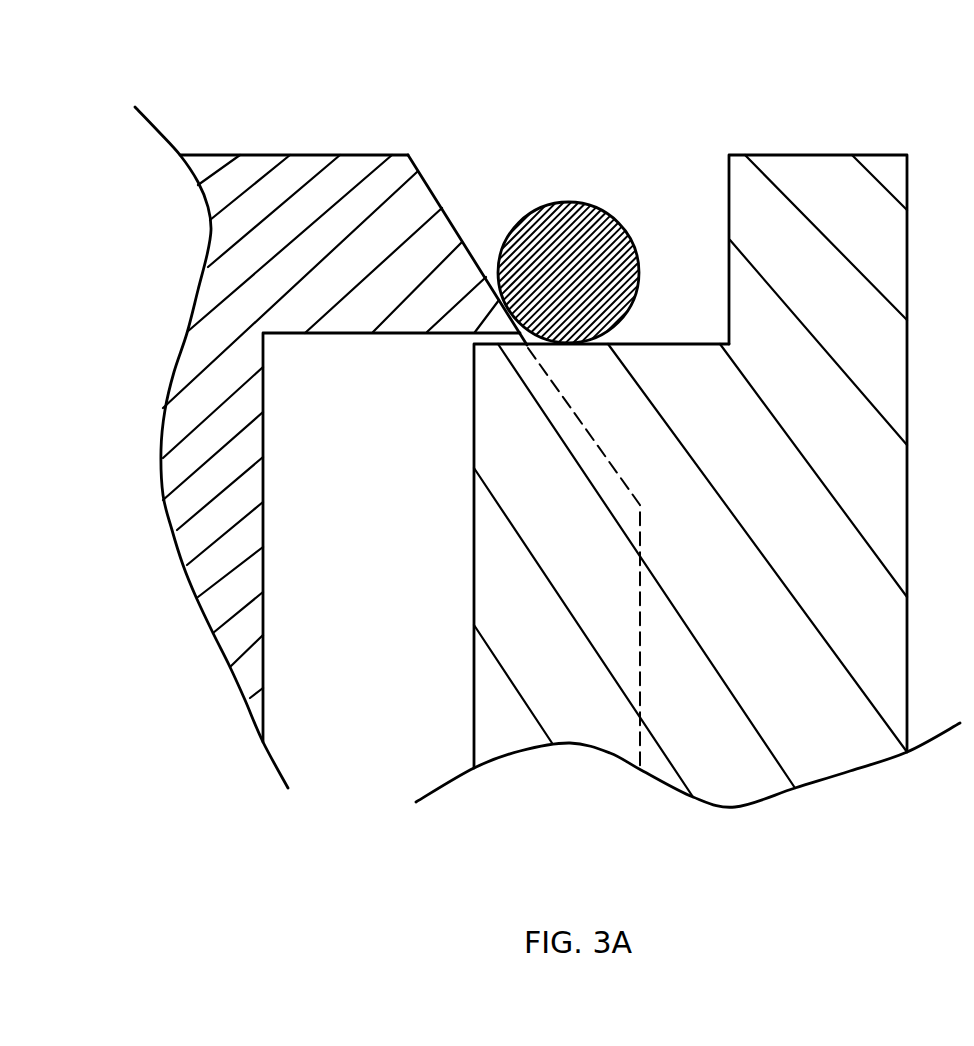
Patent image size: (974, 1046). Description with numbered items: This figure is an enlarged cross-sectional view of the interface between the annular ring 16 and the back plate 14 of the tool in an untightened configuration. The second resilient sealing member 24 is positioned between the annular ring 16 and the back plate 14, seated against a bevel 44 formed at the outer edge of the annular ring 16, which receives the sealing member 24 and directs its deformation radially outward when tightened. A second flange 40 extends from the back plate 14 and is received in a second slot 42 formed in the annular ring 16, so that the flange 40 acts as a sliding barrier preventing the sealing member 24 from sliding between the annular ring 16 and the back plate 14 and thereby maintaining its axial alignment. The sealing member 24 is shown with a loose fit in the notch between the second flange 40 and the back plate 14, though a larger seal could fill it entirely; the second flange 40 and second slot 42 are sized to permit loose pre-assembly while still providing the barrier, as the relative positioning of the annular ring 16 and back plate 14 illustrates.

The back plate 14 is at (818, 153).
The annular ring 16 is at (307, 172).
The second resilient sealing member 24 is at (582, 220).
The second flange 40 is at (497, 417).
The second slot 42 is at (354, 607).
The bevel 44 is at (442, 208).